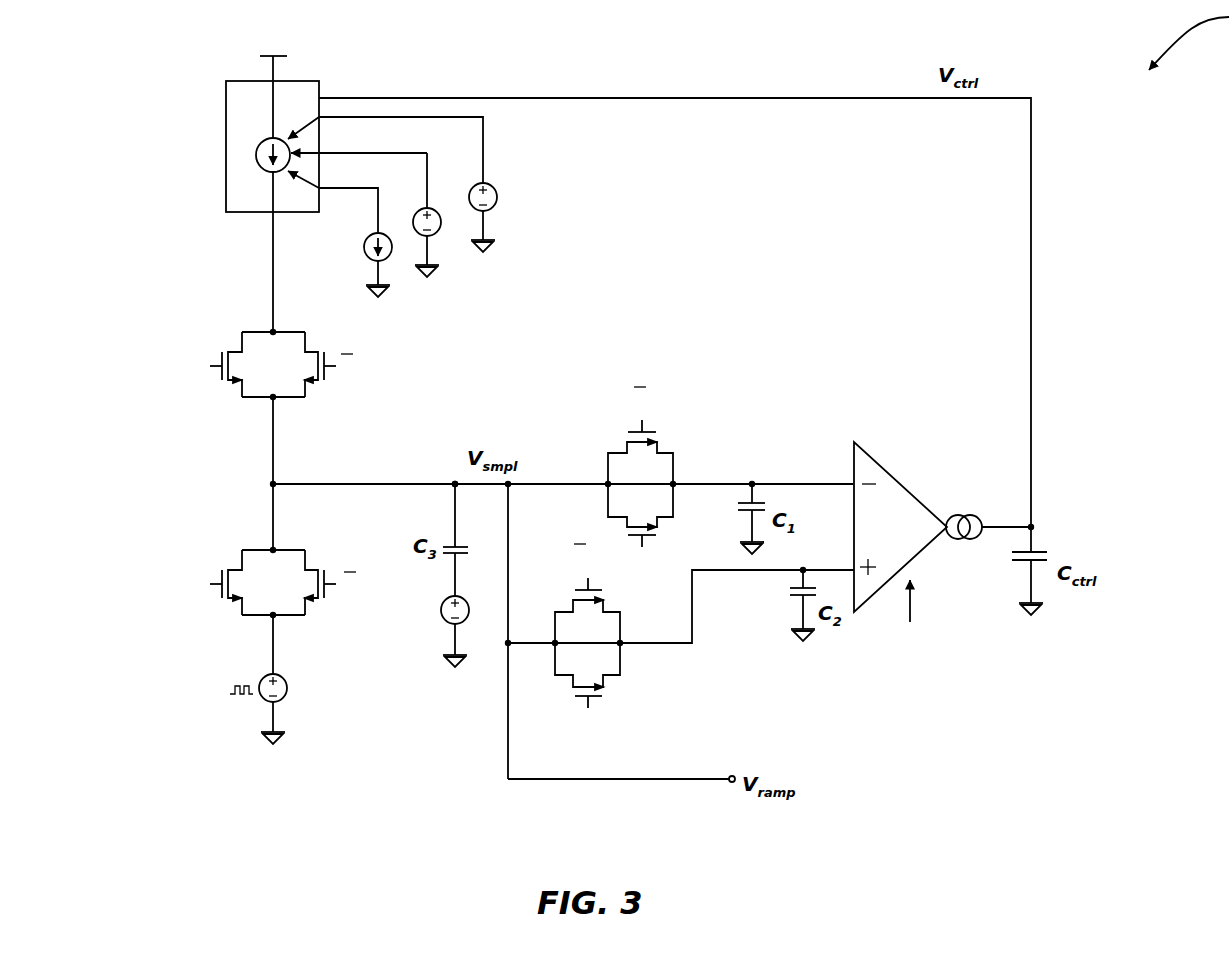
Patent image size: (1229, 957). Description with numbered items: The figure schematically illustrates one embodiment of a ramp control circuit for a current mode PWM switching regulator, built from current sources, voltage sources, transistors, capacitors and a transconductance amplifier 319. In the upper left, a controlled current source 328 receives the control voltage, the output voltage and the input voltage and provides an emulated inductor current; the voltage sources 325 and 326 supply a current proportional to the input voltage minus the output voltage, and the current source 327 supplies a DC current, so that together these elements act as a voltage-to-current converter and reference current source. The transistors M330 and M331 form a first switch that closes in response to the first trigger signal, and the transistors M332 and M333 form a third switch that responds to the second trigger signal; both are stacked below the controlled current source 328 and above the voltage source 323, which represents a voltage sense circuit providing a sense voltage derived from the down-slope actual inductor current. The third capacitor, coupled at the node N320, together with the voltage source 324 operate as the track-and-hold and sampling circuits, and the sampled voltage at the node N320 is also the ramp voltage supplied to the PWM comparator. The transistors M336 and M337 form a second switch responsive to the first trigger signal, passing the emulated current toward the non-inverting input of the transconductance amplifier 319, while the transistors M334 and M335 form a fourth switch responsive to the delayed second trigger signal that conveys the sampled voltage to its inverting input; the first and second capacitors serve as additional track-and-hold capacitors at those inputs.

The transconductance amplifier 319 is at (887, 462).
The node N320 is at (455, 482).
The voltage source 323 is at (285, 700).
The voltage source 324 is at (447, 632).
The voltage source 325 is at (500, 203).
The voltage source 326 is at (433, 237).
The current source 327 is at (387, 260).
The controlled current source 328 is at (225, 203).
The transistor M330 is at (311, 382).
The transistor M331 is at (233, 382).
The transistor M332 is at (308, 568).
The transistor M333 is at (235, 568).
The transistor M334 is at (612, 678).
The transistor M335 is at (573, 593).
The transistor M336 is at (665, 517).
The transistor M337 is at (618, 452).